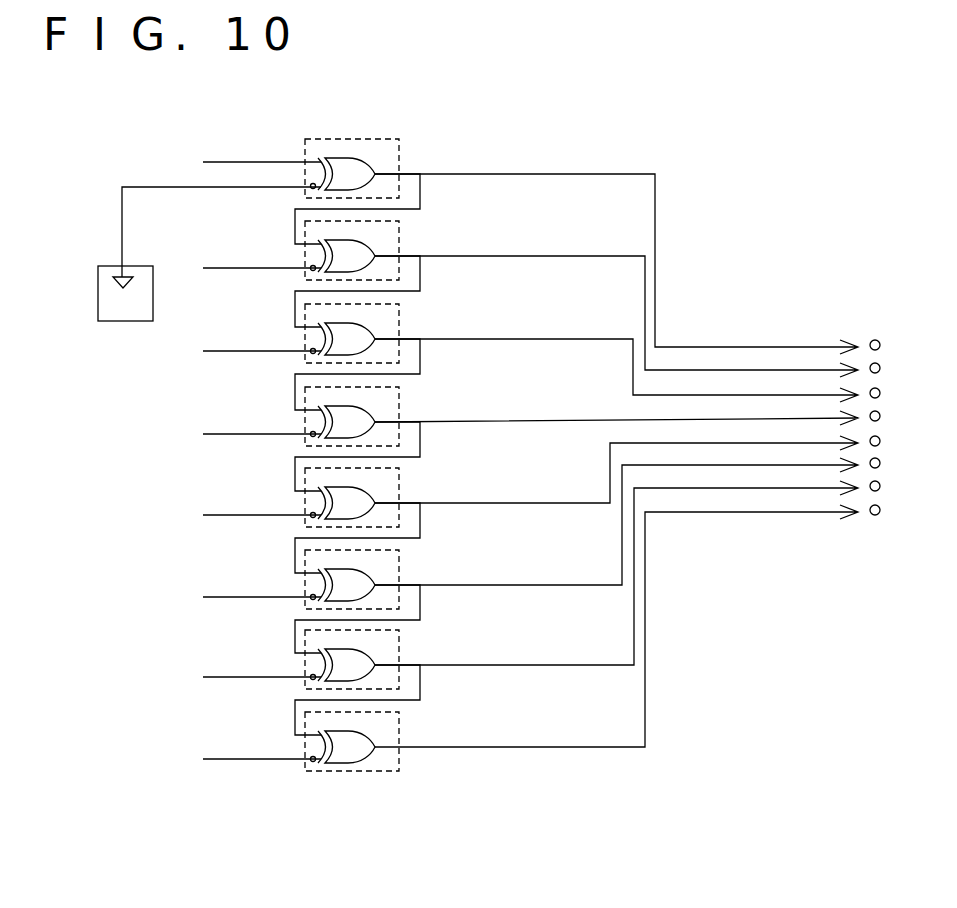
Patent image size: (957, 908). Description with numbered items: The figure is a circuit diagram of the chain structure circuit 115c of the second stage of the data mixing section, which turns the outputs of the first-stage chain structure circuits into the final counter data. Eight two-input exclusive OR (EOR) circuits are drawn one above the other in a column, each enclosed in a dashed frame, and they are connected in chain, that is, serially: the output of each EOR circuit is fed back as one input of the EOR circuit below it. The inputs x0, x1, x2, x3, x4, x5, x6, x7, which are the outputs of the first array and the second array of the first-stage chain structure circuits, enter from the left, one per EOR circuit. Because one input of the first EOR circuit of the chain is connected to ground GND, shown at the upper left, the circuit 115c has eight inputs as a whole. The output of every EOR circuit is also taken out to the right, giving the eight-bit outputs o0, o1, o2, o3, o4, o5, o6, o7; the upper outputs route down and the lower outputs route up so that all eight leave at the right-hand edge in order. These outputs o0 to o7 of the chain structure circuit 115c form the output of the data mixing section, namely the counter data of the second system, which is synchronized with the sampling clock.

The chain structure circuit of the second stage 115c is at (344, 799).
The output x0 of the first-stage chain structure circuits x0 is at (262, 152).
The output x1 of the first-stage chain structure circuits x1 is at (262, 255).
The output x2 of the first-stage chain structure circuits x2 is at (262, 338).
The output x3 of the first-stage chain structure circuits x3 is at (262, 421).
The output x4 of the first-stage chain structure circuits x4 is at (262, 502).
The output x5 of the first-stage chain structure circuits x5 is at (262, 584).
The output x6 of the first-stage chain structure circuits x6 is at (262, 664).
The output x7 of the first-stage chain structure circuits x7 is at (262, 746).
The ground GND is at (209, 254).
The output o0 of the chain structure circuit o0 is at (637, 266).
The output o1 of the chain structure circuit o1 is at (637, 319).
The output o2 of the chain structure circuit o2 is at (637, 373).
The output o3 of the chain structure circuit o3 is at (637, 417).
The output o4 of the chain structure circuit o4 is at (637, 466).
The output o5 of the chain structure circuit o5 is at (637, 518).
The output o6 of the chain structure circuit o6 is at (637, 570).
The output o7 of the chain structure circuit o7 is at (637, 623).